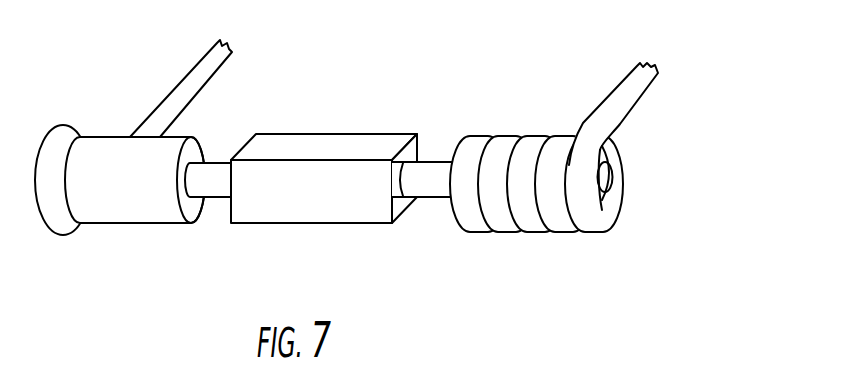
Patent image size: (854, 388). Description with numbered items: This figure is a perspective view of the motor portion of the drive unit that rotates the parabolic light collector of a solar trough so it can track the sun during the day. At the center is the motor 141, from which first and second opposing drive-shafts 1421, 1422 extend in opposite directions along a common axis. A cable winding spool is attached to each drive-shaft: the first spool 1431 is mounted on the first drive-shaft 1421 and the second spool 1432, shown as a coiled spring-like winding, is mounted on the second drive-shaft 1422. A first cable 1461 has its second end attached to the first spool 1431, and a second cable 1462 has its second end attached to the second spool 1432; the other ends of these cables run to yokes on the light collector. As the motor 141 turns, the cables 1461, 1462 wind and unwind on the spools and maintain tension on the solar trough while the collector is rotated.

The first cable winding spool 1431 is at (80, 155).
The first cable 1461 is at (193, 68).
The first drive-shaft 1421 is at (212, 161).
The motor 141 is at (345, 133).
The second drive-shaft 1422 is at (425, 162).
The second cable winding spool 1432 is at (613, 187).
The second cable 1462 is at (640, 103).